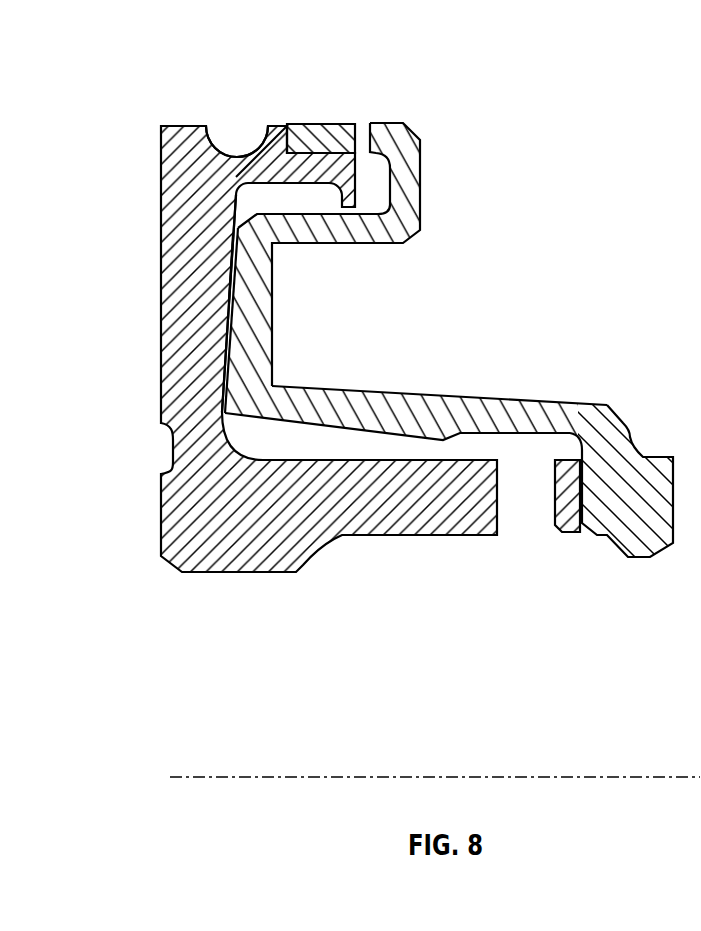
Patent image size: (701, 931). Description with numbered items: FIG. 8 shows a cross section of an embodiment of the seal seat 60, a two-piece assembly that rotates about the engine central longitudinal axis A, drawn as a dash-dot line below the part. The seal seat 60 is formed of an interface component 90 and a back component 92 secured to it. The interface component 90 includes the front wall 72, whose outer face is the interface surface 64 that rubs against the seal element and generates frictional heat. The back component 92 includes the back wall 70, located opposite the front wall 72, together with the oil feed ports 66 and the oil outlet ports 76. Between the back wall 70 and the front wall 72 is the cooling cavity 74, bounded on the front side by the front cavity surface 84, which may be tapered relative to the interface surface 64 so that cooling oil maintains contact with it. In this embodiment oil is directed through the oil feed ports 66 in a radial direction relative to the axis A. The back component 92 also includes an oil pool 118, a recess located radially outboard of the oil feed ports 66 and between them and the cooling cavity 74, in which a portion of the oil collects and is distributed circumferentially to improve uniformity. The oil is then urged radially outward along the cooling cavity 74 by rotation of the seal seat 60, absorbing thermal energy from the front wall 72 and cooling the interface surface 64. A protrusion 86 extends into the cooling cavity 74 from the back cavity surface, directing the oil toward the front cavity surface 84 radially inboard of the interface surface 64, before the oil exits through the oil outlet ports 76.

The seal seat 60 is at (384, 333).
The interface surface 64 is at (296, 322).
The oil feed ports 66 is at (527, 523).
The back wall 70 is at (296, 322).
The front wall 72 is at (449, 340).
The cooling cavity 74 is at (227, 330).
The oil outlet ports 76 is at (363, 128).
The front cavity surface 84 is at (225, 262).
The protrusion 86 is at (228, 413).
The interface component 90 is at (192, 105).
The back component 92 is at (449, 340).
The oil pool 118 is at (527, 433).
The engine central longitudinal axis A is at (662, 776).